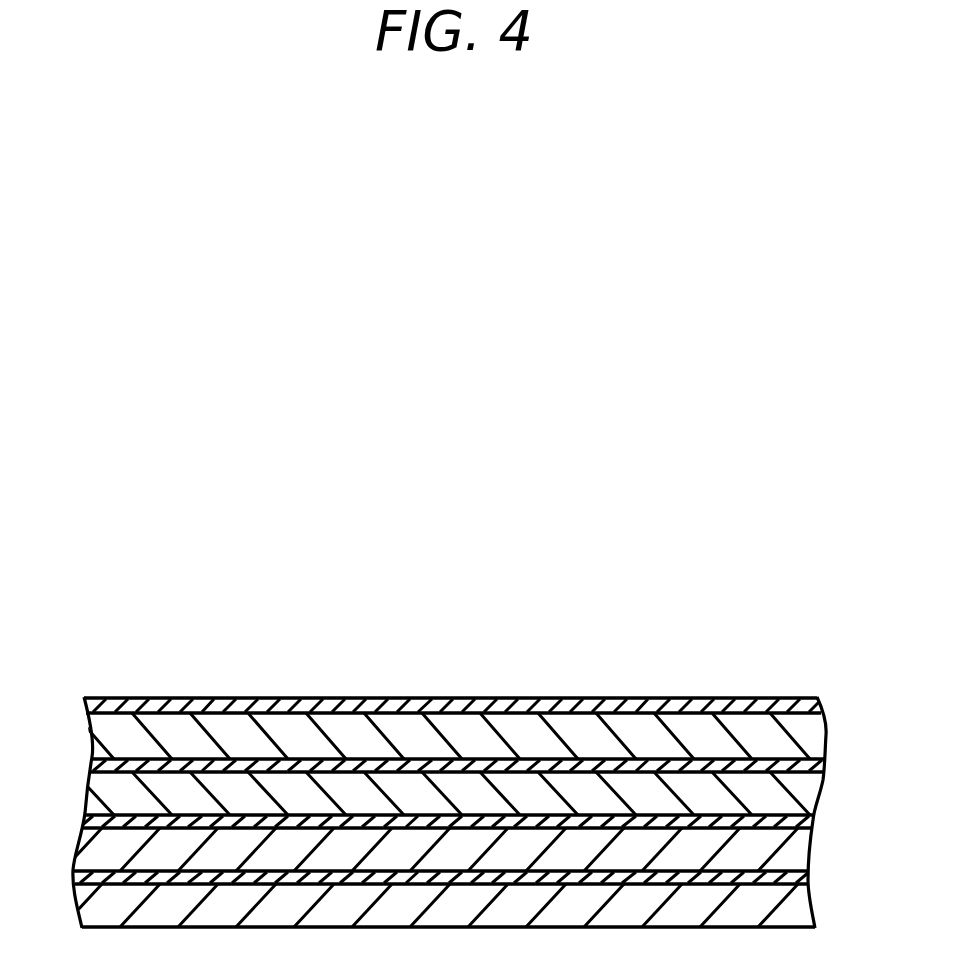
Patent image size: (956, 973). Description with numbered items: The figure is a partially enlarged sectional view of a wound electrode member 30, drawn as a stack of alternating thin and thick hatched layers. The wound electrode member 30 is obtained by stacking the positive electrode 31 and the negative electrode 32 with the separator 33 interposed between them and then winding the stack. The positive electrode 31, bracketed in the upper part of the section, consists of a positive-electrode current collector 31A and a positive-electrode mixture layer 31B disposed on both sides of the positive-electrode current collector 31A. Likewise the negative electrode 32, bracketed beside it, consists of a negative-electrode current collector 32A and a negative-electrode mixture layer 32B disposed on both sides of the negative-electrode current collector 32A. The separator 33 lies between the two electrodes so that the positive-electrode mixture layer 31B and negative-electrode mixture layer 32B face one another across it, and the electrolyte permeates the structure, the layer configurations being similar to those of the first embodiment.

The wound electrode member 30 is at (735, 468).
The positive electrode 31 is at (382, 591).
The positive-electrode current collector 31A is at (168, 757).
The positive-electrode mixture layer 31B is at (332, 732).
The negative electrode 32 is at (665, 590).
The negative-electrode current collector 32A is at (442, 887).
The negative-electrode mixture layer 32B is at (628, 842).
The separator 33 is at (743, 705).